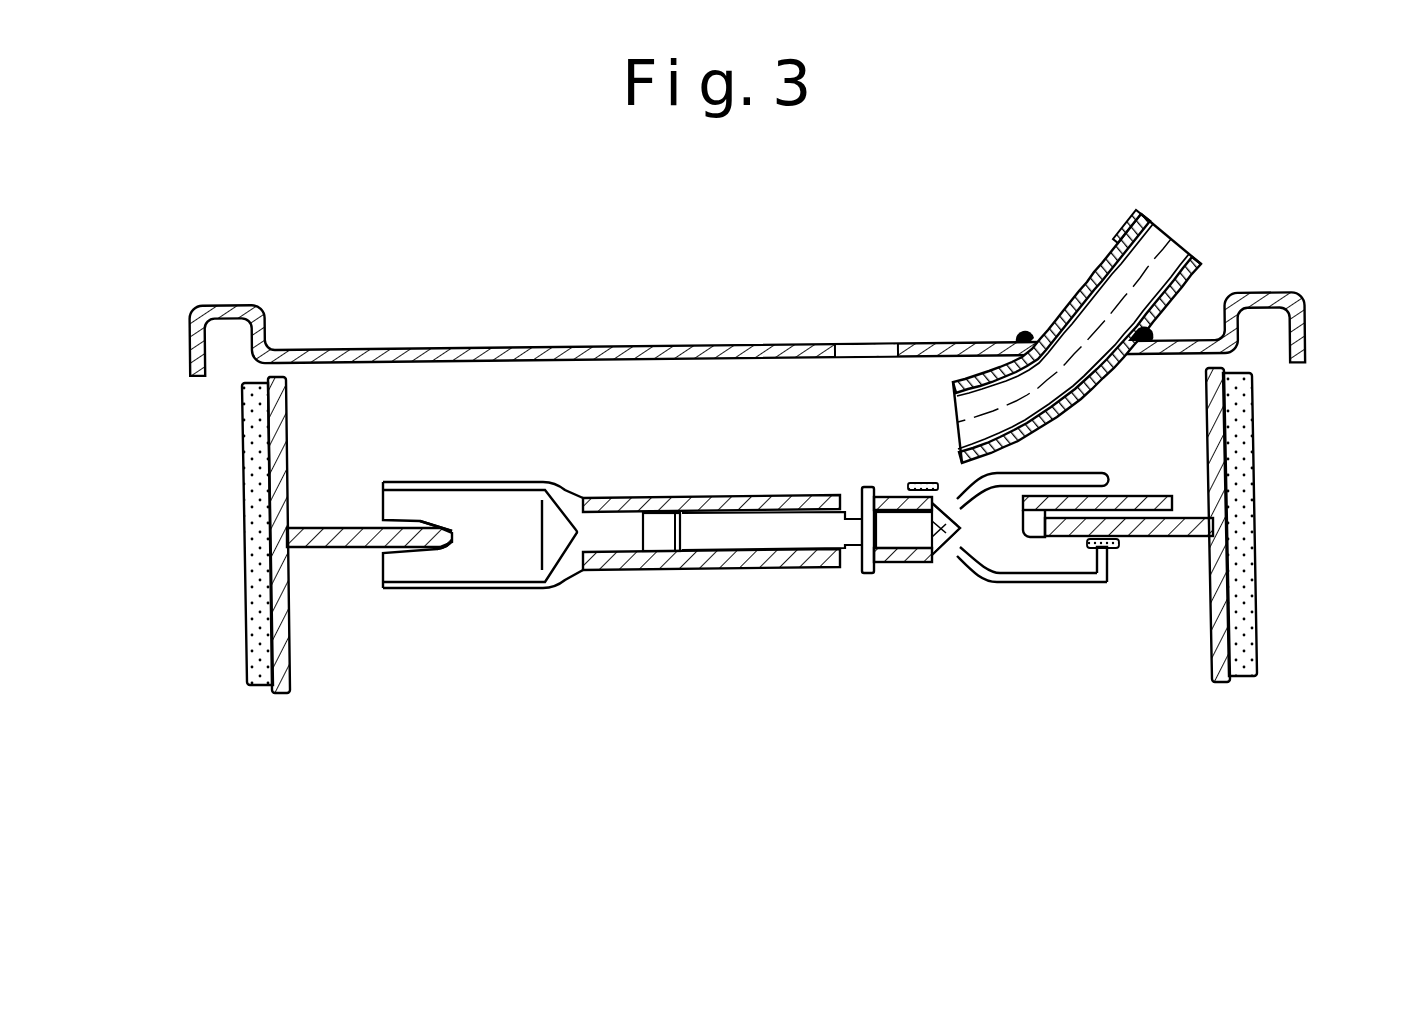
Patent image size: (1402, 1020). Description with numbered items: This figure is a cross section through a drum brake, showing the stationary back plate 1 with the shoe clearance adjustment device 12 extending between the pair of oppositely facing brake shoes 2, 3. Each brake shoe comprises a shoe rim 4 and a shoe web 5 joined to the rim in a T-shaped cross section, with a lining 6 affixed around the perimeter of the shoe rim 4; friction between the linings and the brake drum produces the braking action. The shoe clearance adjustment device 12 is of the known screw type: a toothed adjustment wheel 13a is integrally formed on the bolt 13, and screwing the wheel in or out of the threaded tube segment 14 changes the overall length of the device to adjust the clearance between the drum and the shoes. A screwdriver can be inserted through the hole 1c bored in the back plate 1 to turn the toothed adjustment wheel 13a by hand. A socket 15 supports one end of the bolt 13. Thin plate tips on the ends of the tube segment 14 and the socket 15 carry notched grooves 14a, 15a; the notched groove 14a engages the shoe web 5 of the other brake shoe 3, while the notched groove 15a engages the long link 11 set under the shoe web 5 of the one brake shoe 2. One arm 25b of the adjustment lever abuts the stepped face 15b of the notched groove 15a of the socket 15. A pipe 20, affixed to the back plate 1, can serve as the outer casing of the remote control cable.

The back plate 1 is at (741, 342).
The hole 1c is at (863, 343).
The brake shoe 2 is at (1256, 555).
The brake shoe 3 is at (247, 578).
The shoe rim 4 is at (282, 695).
The shoe web 5 is at (332, 547).
The lining 6 is at (257, 687).
The long link 11 is at (1147, 495).
The shoe clearance adjustment device 12 is at (760, 618).
The bolt 13 is at (805, 569).
The toothed adjustment wheel 13a is at (867, 576).
The tube segment 14 is at (517, 589).
The notched groove 14a is at (428, 548).
The socket 15 is at (927, 564).
The notched groove 15a is at (1033, 605).
The stepped face 15b is at (1093, 574).
The pipe 20 is at (1097, 274).
The arm 25b is at (1120, 549).